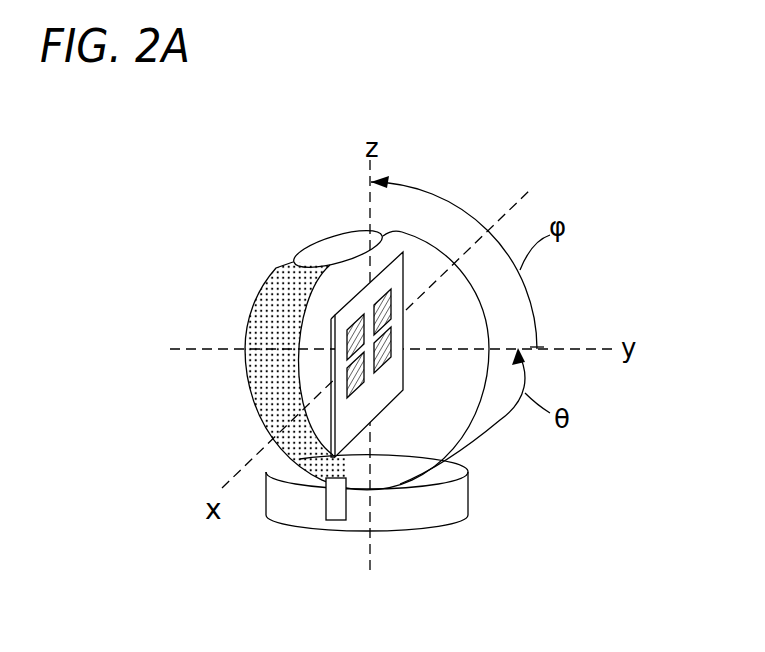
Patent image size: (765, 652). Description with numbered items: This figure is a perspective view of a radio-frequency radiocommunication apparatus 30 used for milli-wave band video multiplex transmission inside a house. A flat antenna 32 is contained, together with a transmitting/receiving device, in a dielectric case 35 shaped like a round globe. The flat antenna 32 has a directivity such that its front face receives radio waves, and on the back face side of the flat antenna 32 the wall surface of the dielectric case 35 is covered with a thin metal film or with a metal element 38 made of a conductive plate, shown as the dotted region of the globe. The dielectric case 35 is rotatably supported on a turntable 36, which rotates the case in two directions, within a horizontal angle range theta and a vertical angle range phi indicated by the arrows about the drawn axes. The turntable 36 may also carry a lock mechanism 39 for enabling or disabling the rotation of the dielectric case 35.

The radio-frequency radiocommunication apparatus 30 is at (190, 253).
The flat antenna 32 is at (405, 267).
The dielectric case 35 is at (487, 325).
The turntable 36 is at (464, 495).
The metal element 38 is at (270, 388).
The lock mechanism 39 is at (337, 512).